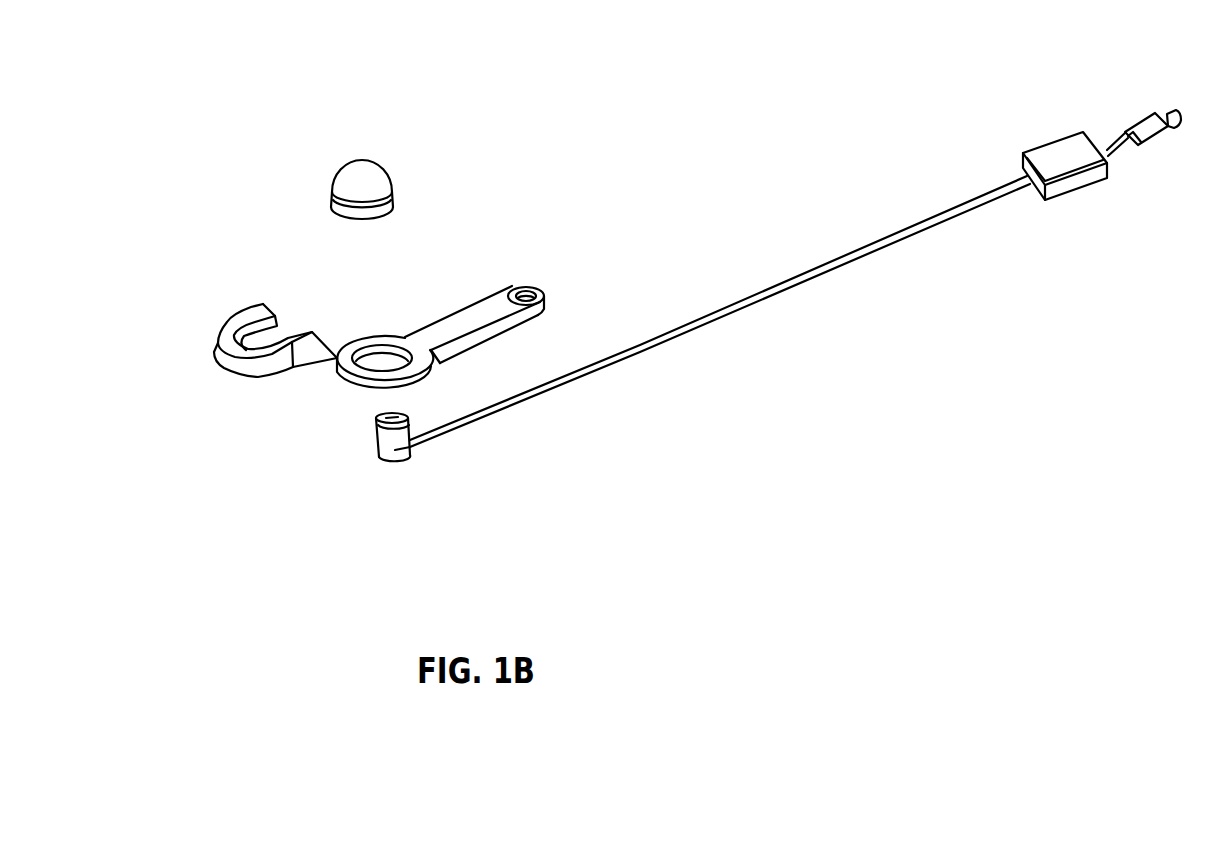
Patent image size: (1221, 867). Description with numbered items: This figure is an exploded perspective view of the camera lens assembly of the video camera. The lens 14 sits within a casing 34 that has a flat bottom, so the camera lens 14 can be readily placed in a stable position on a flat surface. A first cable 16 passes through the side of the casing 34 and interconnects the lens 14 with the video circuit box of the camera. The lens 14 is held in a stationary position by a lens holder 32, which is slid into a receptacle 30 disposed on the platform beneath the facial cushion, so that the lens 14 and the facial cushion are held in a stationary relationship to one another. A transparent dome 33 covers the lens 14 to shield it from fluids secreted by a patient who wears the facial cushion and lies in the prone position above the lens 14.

The lens 14 is at (398, 425).
The first cable 16 is at (677, 333).
The receptacle 30 is at (265, 355).
The lens holder 32 is at (493, 317).
The transparent dome 33 is at (372, 185).
The casing 34 is at (405, 457).